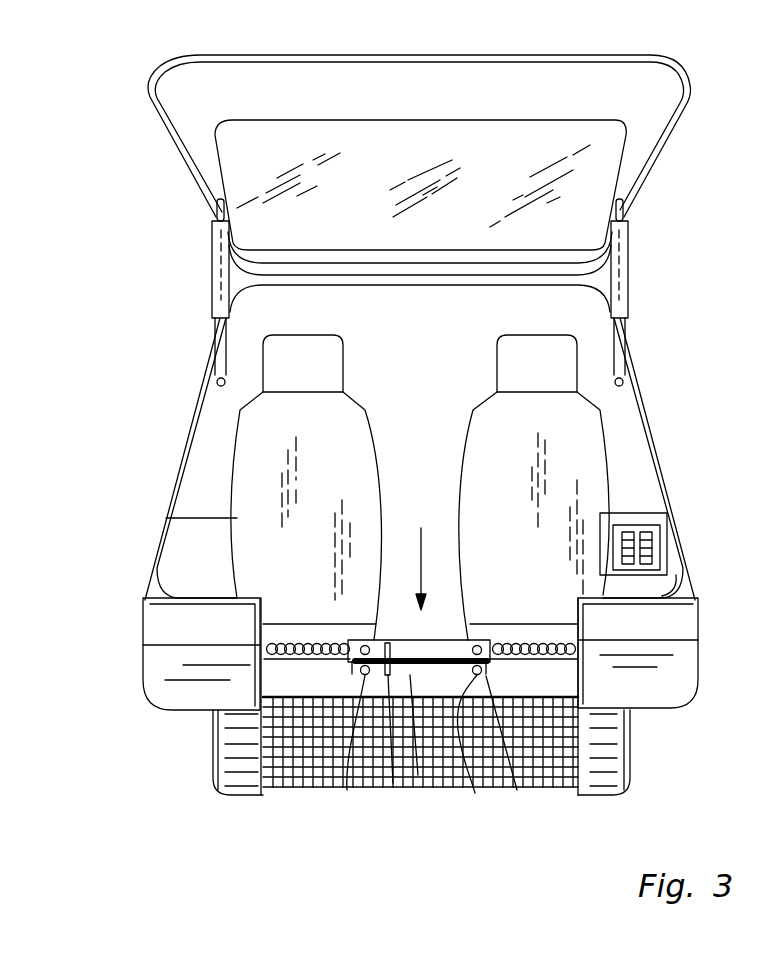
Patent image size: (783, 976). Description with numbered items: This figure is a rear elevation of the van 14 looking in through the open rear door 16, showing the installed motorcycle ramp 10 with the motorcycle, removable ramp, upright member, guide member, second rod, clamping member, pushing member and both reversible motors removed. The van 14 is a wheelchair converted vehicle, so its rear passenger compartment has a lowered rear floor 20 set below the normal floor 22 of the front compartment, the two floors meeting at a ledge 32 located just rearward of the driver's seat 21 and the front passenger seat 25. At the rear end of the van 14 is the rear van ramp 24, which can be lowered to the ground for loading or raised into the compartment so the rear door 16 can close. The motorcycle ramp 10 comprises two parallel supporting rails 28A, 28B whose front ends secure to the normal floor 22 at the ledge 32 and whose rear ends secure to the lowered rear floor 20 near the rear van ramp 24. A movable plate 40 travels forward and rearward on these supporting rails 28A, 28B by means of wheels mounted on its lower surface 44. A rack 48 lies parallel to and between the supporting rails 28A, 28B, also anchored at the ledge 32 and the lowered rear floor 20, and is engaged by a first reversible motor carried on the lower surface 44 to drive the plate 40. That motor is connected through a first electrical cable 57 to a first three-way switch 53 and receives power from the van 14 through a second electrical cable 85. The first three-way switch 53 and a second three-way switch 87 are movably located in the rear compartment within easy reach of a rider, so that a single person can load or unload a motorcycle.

The motorcycle ramp 10 is at (424, 547).
The van 14 is at (648, 427).
The rear door 16 is at (653, 107).
The lowered rear floor 20 is at (603, 657).
The driver's seat 21 is at (355, 410).
The normal floor 22 is at (558, 677).
The rear van ramp 24 is at (538, 755).
The front passenger seat 25 is at (594, 415).
The supporting rail 28A is at (330, 642).
The supporting rail 28B is at (475, 793).
The ledge 32 is at (563, 695).
The movable plate 40 is at (420, 658).
The lower surface 44 is at (418, 775).
The rack 48 is at (362, 643).
The first three-way switch 53 is at (652, 590).
The first electrical cable 57 is at (535, 637).
The second electrical cable 85 is at (268, 660).
The second three-way switch 87 is at (625, 545).